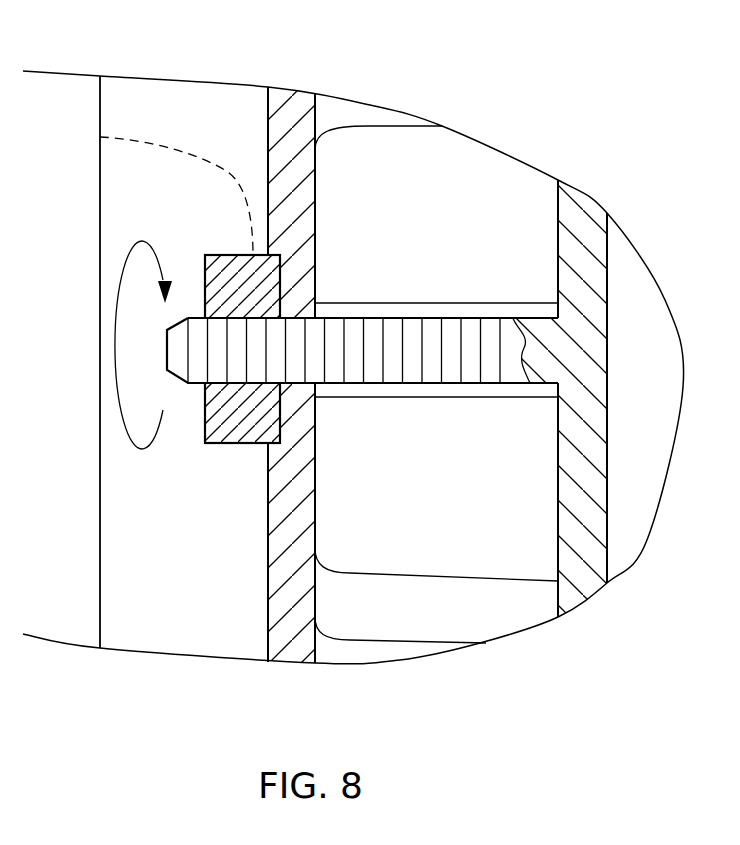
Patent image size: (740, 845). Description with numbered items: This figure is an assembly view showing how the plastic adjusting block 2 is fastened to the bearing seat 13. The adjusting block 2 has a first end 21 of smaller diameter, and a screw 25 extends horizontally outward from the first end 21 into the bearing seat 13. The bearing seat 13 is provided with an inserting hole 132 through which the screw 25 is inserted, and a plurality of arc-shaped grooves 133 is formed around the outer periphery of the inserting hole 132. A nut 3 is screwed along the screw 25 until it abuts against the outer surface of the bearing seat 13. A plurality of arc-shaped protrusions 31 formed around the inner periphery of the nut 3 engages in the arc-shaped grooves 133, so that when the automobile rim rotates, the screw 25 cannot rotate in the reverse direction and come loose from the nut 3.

The adjusting block 2 is at (623, 282).
The first end 21 is at (558, 208).
The bearing seat 13 is at (278, 126).
The inserting hole 132 is at (296, 320).
The arc-shaped grooves 133 is at (100, 137).
The screw 25 is at (393, 328).
The nut 3 is at (162, 360).
The arc-shaped protrusions 31 is at (270, 280).